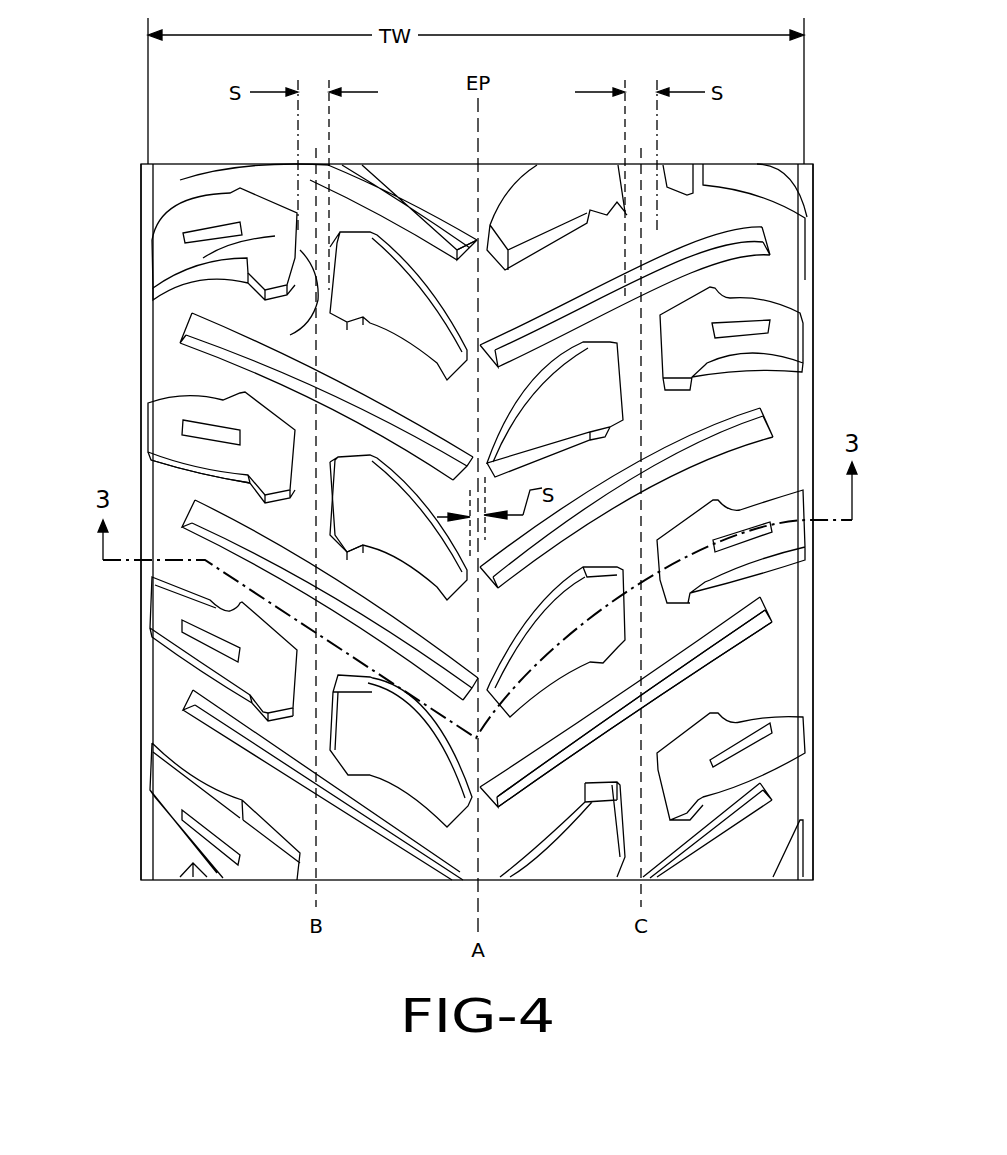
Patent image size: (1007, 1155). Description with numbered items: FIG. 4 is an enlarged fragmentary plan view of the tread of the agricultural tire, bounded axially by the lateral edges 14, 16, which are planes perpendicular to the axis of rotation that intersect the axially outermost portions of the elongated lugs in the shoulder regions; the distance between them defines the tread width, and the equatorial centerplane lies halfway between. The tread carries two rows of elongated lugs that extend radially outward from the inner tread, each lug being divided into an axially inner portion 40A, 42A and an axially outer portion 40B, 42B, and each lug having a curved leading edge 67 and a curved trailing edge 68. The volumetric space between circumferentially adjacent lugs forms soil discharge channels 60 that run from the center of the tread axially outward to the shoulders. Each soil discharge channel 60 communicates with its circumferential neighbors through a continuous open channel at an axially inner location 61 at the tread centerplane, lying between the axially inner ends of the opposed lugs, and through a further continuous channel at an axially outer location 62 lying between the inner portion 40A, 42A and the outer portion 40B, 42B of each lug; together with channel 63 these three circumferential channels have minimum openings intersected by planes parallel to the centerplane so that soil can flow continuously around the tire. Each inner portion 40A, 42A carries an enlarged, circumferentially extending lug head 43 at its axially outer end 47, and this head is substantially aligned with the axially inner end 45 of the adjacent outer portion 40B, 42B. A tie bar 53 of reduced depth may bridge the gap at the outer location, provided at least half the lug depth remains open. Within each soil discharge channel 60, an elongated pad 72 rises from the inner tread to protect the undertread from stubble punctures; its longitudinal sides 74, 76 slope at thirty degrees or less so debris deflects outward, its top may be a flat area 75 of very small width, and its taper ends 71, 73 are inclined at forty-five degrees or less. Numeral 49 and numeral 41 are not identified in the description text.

The lateral edge 14 is at (148, 95).
The lateral edge 16 is at (804, 95).
The shoulder lug 49 is at (167, 248).
The axially outer portion 40B is at (278, 232).
The axially outer location 62 is at (320, 250).
The axially inner portion 40A is at (377, 317).
The trailing edge 68 is at (213, 393).
The leading edge 67 is at (200, 455).
The axially inner end 45 is at (297, 463).
The axially outer end 47 is at (330, 463).
The lug head 43 is at (398, 527).
The axially inner location 61 is at (467, 277).
The center lug 41 is at (503, 257).
The circumferential channel 63 is at (628, 200).
The soil discharge channel 60 is at (777, 240).
The axially inner portion 42A is at (595, 370).
The axially outer portion 42B is at (787, 338).
The tie bar 53 is at (307, 703).
The elongated pad 72 is at (770, 417).
The taper end 73 is at (775, 610).
The longitudinal side 74 is at (710, 640).
The longitudinal side 76 is at (706, 658).
The flat area 75 is at (570, 742).
The taper end 71 is at (485, 805).